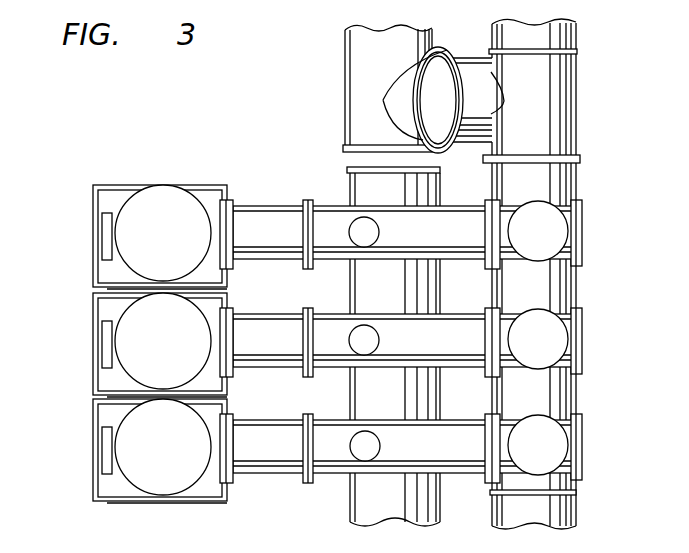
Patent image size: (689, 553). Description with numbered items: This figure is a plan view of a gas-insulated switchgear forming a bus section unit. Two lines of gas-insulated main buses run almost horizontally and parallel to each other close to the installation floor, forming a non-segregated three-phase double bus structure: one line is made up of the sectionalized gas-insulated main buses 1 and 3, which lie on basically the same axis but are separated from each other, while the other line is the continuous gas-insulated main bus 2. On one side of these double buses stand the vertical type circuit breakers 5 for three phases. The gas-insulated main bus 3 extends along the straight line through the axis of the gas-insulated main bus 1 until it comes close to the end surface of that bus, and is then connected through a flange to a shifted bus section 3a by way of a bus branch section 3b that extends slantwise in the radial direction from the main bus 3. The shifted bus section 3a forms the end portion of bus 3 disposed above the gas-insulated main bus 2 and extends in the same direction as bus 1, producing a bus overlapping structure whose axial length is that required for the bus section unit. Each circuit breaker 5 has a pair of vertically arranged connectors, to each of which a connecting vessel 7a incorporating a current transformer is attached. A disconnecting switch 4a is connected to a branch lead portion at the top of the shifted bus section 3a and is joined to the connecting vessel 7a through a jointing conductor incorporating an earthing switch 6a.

The gas-insulated main bus 1 is at (350, 507).
The gas-insulated main bus 2 is at (572, 30).
The gas-insulated main bus 3 is at (345, 95).
The shifted bus section 3a is at (582, 278).
The bus branch section 3b is at (468, 53).
The disconnecting switch 4a is at (545, 202).
The circuit breaker 5 is at (120, 313).
The earthing switch 6a is at (350, 226).
The connecting vessel 7a is at (267, 206).